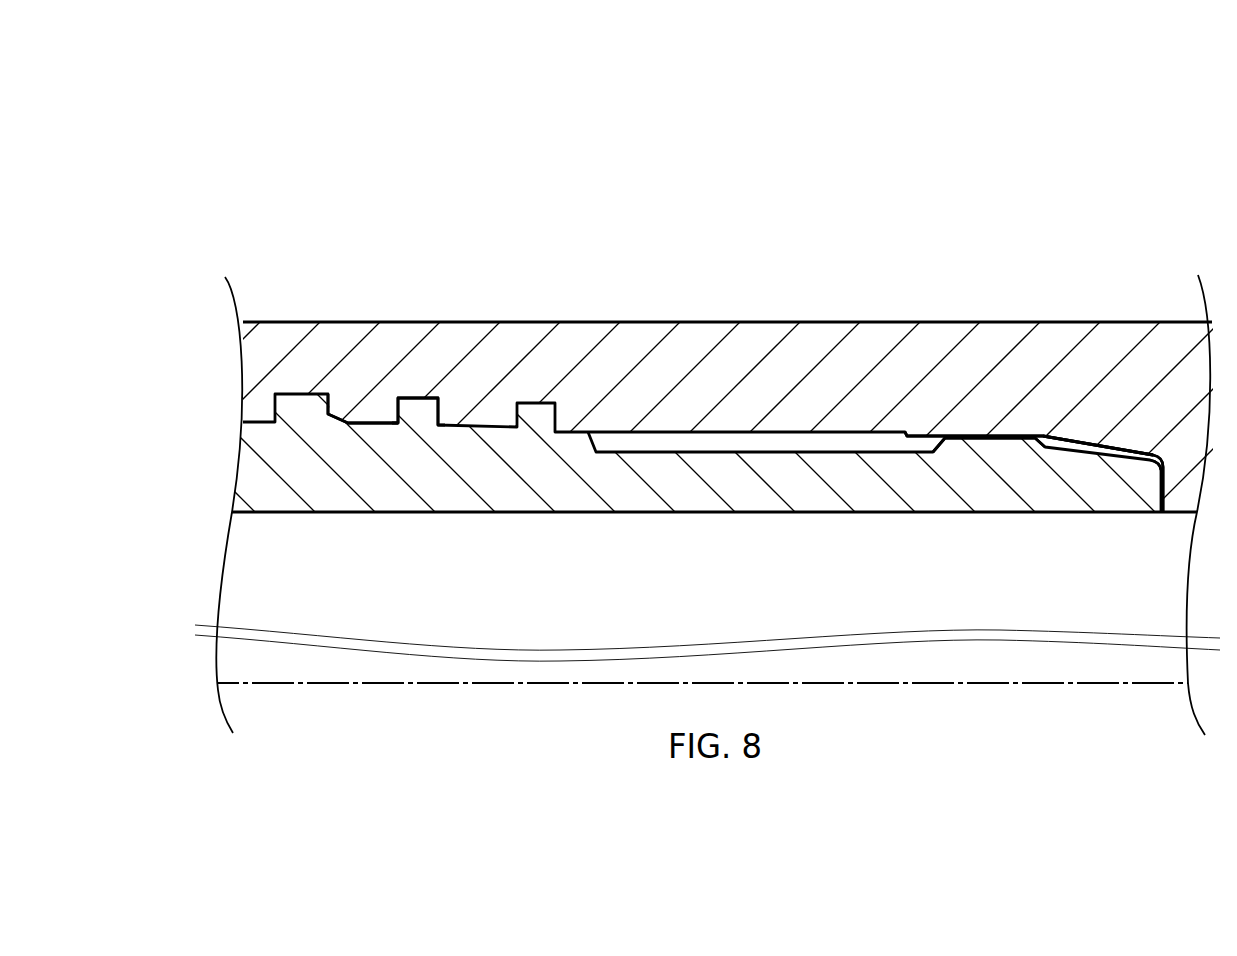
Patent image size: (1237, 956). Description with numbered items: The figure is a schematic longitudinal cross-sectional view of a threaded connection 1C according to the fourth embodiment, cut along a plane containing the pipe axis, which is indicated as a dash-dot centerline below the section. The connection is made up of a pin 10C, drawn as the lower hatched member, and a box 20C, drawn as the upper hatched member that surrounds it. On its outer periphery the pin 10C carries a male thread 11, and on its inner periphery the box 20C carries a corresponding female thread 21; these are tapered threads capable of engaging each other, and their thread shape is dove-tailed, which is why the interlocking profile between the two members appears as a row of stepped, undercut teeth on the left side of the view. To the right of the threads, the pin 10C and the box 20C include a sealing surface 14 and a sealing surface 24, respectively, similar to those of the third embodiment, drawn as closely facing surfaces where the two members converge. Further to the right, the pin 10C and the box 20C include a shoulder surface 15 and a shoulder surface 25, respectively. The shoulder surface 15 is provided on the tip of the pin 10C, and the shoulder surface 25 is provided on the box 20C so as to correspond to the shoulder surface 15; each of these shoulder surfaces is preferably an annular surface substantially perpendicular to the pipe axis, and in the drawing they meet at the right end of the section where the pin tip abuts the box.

The threaded connection 1C is at (1177, 135).
The box 20C is at (803, 309).
The pin 10C is at (705, 521).
The female thread 21 is at (418, 394).
The male thread 11 is at (366, 435).
The sealing surface 24 is at (1008, 436).
The shoulder surface 25 is at (1162, 503).
The sealing surface 14 is at (980, 440).
The shoulder surface 15 is at (1164, 484).